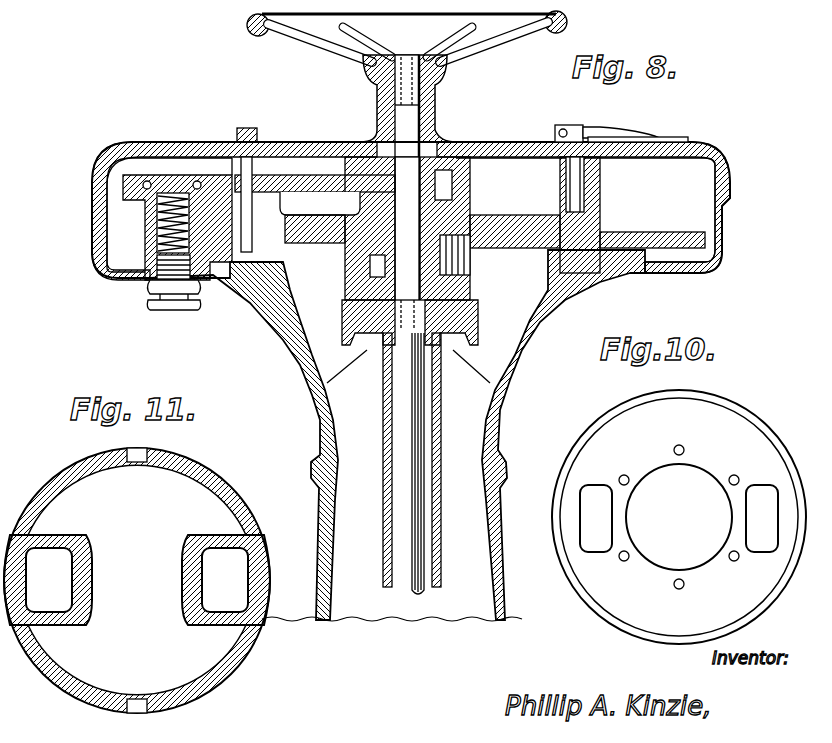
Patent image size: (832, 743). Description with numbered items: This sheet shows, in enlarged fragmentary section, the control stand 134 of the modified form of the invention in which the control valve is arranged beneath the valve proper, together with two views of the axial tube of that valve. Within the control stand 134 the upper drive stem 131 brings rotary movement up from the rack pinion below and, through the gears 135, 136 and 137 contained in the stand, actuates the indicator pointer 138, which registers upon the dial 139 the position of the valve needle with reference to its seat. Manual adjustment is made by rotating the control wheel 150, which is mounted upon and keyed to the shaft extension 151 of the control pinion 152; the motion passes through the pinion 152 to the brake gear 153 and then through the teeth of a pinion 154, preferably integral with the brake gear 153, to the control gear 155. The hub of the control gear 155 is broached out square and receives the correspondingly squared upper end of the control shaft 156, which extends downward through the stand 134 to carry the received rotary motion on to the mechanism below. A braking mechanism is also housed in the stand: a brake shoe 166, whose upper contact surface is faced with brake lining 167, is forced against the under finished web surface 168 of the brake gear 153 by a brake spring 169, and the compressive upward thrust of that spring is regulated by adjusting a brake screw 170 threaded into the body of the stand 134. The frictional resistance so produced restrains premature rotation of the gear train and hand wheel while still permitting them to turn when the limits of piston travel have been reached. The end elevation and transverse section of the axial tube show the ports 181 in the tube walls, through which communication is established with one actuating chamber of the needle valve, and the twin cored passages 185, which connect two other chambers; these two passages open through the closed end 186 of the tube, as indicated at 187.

In FIG. 8, the upper drive stem 131 is at (428, 584).
In FIG. 8, the control stand 134 is at (322, 452).
In FIG. 8, the gear 135 is at (370, 265).
In FIG. 8, the gear 136 is at (470, 262).
In FIG. 8, the gear 137 is at (612, 238).
In FIG. 8, the indicator pointer 138 is at (612, 128).
In FIG. 8, the dial 139 is at (672, 135).
In FIG. 8, the control wheel 150 is at (250, 30).
In FIG. 8, the shaft extension 151 is at (430, 130).
In FIG. 8, the control pinion 152 is at (452, 184).
In FIG. 8, the brake gear 153 is at (315, 180).
In FIG. 8, the pinion 154 is at (242, 290).
In FIG. 8, the control gear 155 is at (290, 225).
In FIG. 8, the control shaft 156 is at (422, 430).
In FIG. 8, the brake shoe 166 is at (145, 200).
In FIG. 8, the brake lining 167 is at (170, 185).
In FIG. 8, the web surface 168 is at (283, 195).
In FIG. 8, the brake spring 169 is at (160, 265).
In FIG. 8, the brake screw 170 is at (165, 288).
In FIG. 11, the ports 181 is at (235, 523).
In FIG. 11, the twin cored passages 185 is at (215, 585).
In FIG. 10, the end of the tube 186 is at (708, 412).
In FIG. 10, the passage openings 187 is at (752, 521).